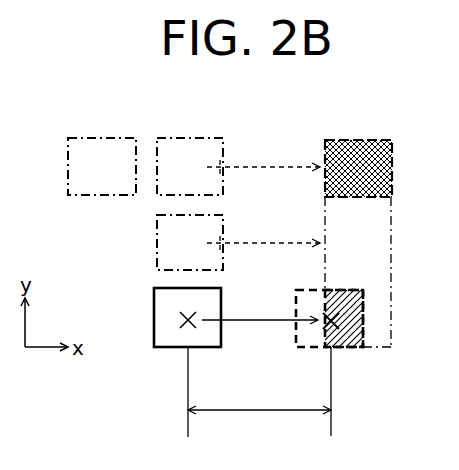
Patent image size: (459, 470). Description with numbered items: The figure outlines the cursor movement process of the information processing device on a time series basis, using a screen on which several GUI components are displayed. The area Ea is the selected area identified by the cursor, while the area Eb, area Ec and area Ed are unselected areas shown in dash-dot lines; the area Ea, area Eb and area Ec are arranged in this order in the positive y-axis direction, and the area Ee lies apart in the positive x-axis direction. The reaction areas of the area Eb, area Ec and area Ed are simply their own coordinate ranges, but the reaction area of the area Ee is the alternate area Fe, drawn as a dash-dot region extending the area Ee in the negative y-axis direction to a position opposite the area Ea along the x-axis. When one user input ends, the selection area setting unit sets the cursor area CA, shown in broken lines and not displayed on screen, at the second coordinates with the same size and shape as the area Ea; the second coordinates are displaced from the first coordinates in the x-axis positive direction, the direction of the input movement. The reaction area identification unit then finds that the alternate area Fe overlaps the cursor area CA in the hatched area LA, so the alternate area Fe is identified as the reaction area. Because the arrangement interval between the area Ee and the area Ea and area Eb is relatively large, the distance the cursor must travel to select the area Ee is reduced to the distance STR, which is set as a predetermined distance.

The area Ea is at (154, 320).
The area Eb is at (155, 240).
The area Ec is at (190, 138).
The area Ed is at (100, 138).
The area Ee is at (366, 140).
The alternate area Fe is at (392, 240).
The cursor area CA is at (305, 348).
The area LA is at (352, 348).
The distance STR is at (259, 425).